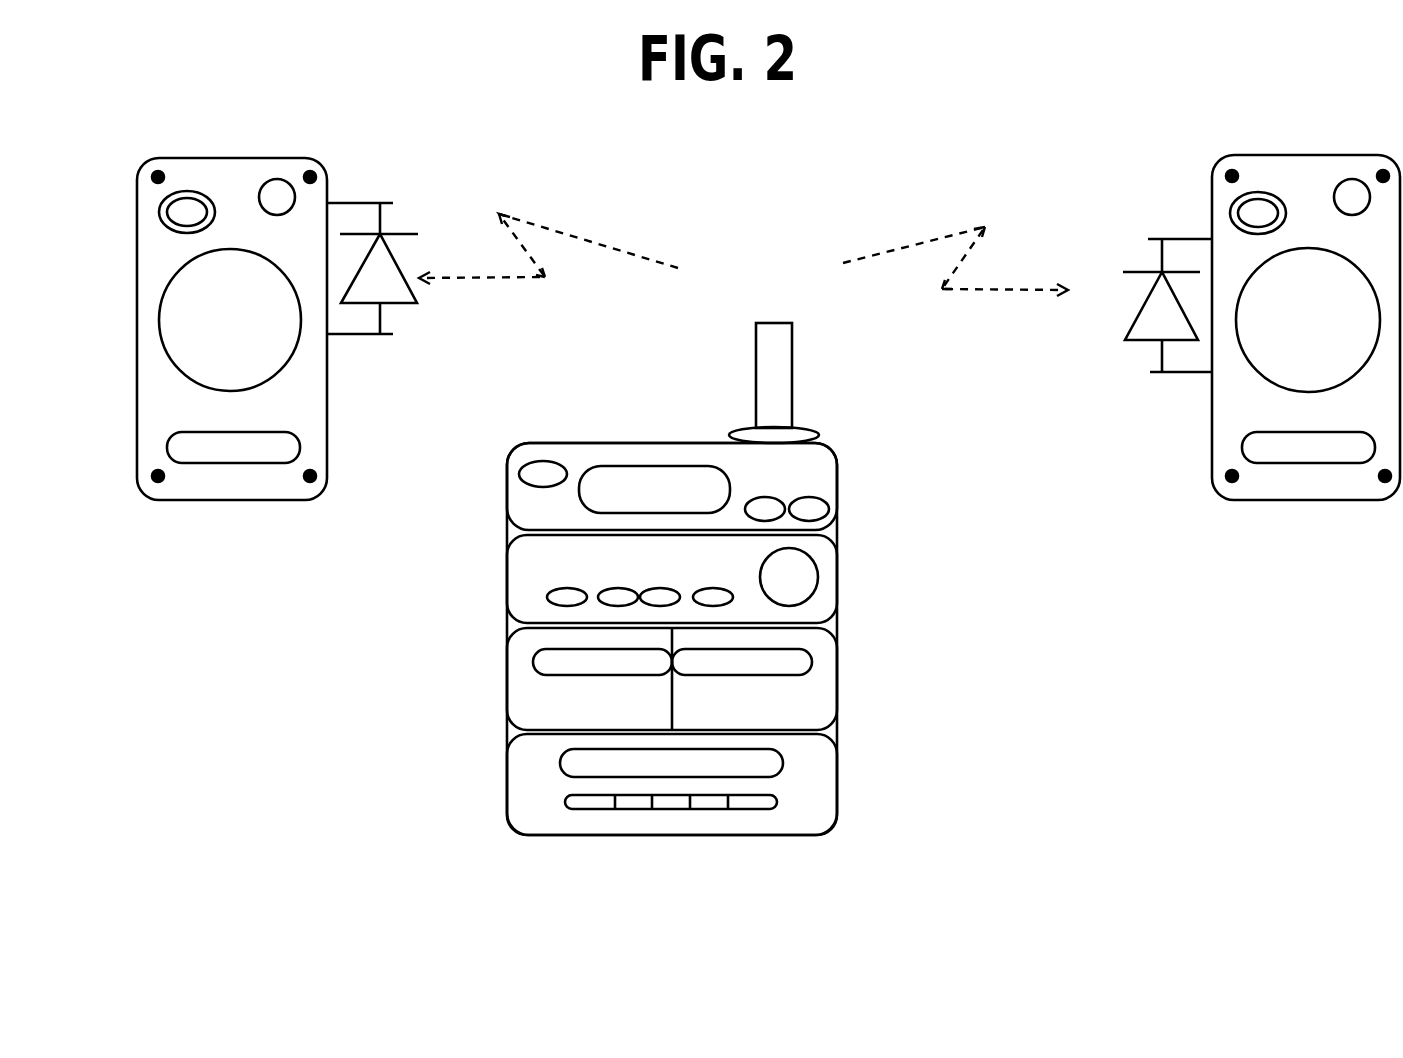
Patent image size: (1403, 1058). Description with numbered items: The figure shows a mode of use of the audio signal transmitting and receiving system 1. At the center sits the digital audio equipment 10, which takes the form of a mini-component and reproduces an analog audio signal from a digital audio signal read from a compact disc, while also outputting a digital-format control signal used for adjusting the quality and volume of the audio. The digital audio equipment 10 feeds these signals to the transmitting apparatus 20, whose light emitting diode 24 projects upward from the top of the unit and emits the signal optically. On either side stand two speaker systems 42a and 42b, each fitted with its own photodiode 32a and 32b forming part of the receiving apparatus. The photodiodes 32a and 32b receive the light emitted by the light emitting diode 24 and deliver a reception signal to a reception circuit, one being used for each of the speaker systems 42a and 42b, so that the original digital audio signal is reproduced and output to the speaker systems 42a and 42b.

The audio signal transmitting and receiving system 1 is at (752, 921).
The digital audio equipment 10 is at (837, 658).
The transmitting apparatus 20 is at (837, 484).
The light emitting diode 24 is at (792, 385).
The photodiode 32a is at (407, 303).
The photodiode 32b is at (1140, 340).
The speaker system 42a is at (247, 500).
The speaker system 42b is at (1305, 500).